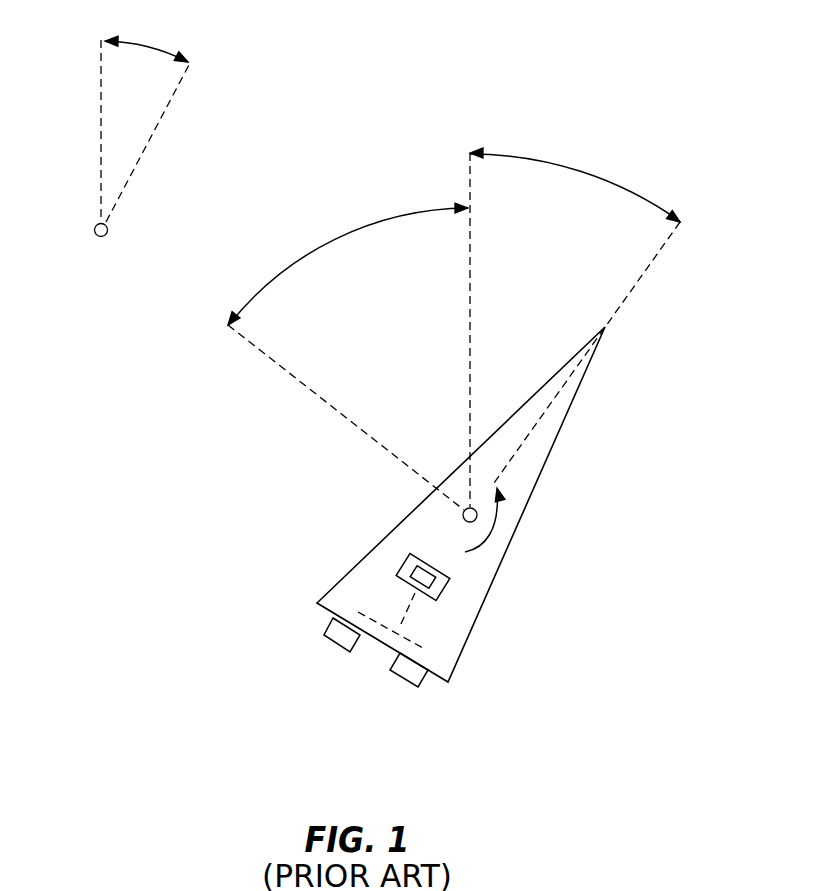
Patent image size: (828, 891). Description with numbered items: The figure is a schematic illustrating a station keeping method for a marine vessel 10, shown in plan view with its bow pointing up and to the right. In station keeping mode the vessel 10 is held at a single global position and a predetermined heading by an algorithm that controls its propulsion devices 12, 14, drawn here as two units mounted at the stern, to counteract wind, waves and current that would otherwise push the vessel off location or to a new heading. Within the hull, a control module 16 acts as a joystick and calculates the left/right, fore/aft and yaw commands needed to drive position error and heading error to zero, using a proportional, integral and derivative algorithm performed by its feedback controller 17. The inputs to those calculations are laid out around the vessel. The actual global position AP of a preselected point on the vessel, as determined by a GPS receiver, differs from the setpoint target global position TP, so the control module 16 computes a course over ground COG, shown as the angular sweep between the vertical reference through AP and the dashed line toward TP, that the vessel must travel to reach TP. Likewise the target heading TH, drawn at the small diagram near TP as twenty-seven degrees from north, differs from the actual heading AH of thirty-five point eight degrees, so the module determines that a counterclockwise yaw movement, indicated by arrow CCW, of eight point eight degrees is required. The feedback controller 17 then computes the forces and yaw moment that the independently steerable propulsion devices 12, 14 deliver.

The marine vessel 10 is at (498, 572).
The propulsion device 12 is at (340, 650).
The propulsion device 14 is at (405, 688).
The control module 16 is at (440, 597).
The feedback controller 17 is at (425, 565).
The target global position TP is at (100, 237).
The target heading TH is at (147, 43).
The actual global position AP is at (462, 512).
The actual heading AH is at (580, 170).
The course over ground COG is at (378, 220).
The counterclockwise yaw movement CCW is at (507, 513).